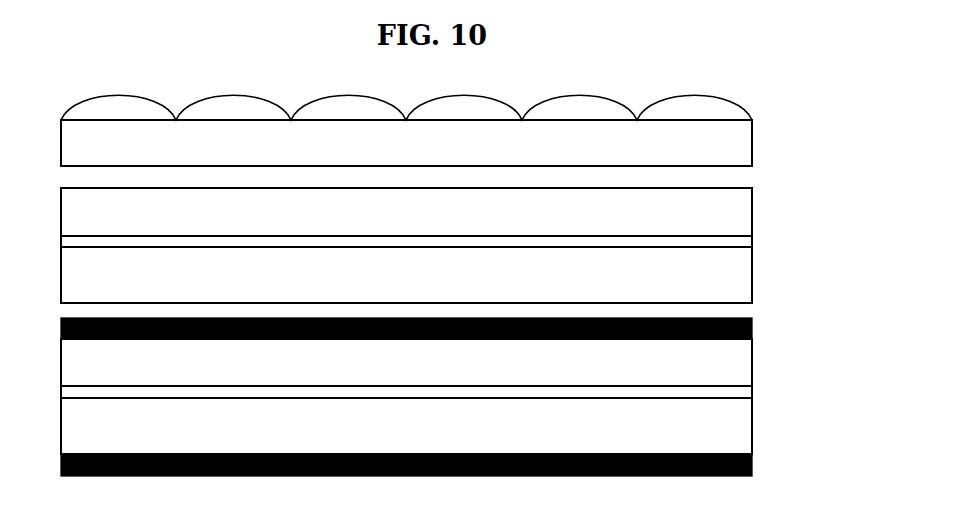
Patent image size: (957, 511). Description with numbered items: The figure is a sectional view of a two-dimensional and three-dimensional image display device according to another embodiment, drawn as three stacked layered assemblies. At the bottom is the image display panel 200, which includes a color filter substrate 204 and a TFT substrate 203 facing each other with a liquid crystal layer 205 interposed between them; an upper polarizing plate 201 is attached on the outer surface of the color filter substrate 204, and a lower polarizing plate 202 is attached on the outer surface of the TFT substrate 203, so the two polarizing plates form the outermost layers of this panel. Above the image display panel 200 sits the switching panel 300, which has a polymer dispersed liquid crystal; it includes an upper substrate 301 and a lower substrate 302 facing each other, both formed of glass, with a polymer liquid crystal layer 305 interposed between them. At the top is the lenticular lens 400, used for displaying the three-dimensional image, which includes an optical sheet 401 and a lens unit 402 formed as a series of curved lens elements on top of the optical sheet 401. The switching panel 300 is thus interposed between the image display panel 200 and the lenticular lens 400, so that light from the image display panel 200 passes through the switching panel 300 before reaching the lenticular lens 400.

The lenticular lens 400 is at (462, 128).
The optical sheet 401 is at (752, 142).
The lens unit 402 is at (737, 103).
The switching panel 300 is at (463, 245).
The upper substrate 301 is at (752, 211).
The lower substrate 302 is at (752, 278).
The polymer liquid crystal layer 305 is at (752, 241).
The image display panel 200 is at (464, 395).
The upper polarizing plate 201 is at (752, 326).
The lower polarizing plate 202 is at (439, 464).
The TFT substrate 203 is at (752, 426).
The color filter substrate 204 is at (752, 363).
The liquid crystal layer 205 is at (752, 390).